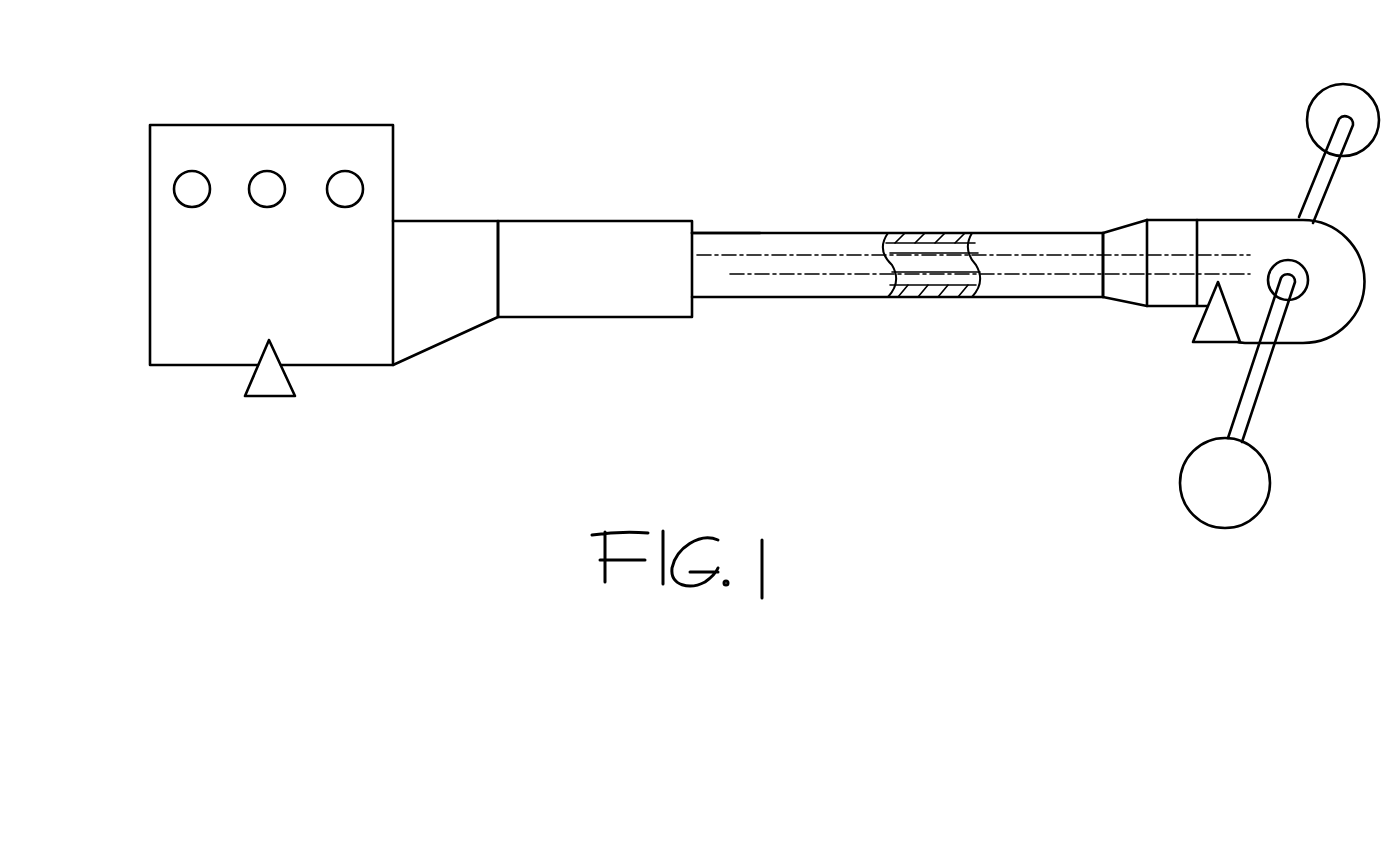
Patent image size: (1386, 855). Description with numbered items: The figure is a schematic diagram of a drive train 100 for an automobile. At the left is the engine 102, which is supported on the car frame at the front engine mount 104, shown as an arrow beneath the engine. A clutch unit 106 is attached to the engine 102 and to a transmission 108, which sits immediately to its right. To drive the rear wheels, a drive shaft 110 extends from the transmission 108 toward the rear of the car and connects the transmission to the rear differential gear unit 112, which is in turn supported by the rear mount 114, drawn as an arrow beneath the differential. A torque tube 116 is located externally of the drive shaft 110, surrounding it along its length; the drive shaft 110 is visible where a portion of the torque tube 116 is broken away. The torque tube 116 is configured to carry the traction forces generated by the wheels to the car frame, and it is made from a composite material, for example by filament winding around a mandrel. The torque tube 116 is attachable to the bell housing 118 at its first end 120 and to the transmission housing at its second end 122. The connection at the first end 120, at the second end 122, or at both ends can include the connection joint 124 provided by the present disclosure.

The drive train 100 is at (764, 266).
The engine 102 is at (271, 193).
The front engine mount 104 is at (282, 415).
The clutch unit 106 is at (449, 242).
The transmission 108 is at (595, 311).
The drive shaft 110 is at (931, 224).
The rear differential gear unit 112 is at (1263, 306).
The rear mount 114 is at (1177, 344).
The torque tube 116 is at (971, 315).
The bell housing 118 is at (1167, 202).
The first end 120 is at (1098, 221).
The second end 122 is at (733, 183).
The connection joint 124 is at (1062, 303).